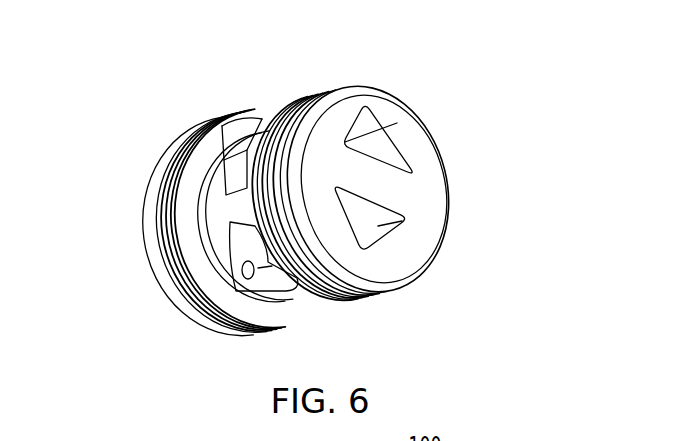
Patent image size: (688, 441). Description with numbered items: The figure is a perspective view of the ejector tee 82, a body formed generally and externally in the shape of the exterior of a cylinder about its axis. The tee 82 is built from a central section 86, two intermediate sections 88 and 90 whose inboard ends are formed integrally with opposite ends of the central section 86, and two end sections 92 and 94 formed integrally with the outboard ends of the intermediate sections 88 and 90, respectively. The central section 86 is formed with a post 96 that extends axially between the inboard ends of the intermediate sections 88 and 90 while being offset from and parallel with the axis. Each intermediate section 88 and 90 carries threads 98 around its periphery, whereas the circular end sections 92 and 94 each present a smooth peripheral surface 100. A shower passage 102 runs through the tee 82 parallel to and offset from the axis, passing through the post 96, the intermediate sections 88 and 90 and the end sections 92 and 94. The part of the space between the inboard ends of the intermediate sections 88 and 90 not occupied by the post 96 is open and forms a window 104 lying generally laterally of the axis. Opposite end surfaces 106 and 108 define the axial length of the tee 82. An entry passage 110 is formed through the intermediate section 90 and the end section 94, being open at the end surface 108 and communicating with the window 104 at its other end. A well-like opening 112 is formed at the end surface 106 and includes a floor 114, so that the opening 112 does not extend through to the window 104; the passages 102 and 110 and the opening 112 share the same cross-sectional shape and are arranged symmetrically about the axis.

The ejector tee 82 is at (512, 159).
The central section 86 is at (225, 144).
The intermediate section 88 is at (283, 90).
The intermediate section 90 is at (181, 127).
The end section 92 is at (386, 78).
The end section 94 is at (137, 186).
The post 96 is at (242, 150).
The threads 98 is at (250, 335).
The smooth peripheral surface 100 is at (187, 304).
The shower passage 102 is at (395, 140).
The window 104 is at (290, 302).
The end surface 106 is at (437, 201).
The end surface 108 is at (143, 230).
The entry passage 110 is at (243, 248).
The well-like opening 112 is at (395, 246).
The floor 114 is at (363, 238).